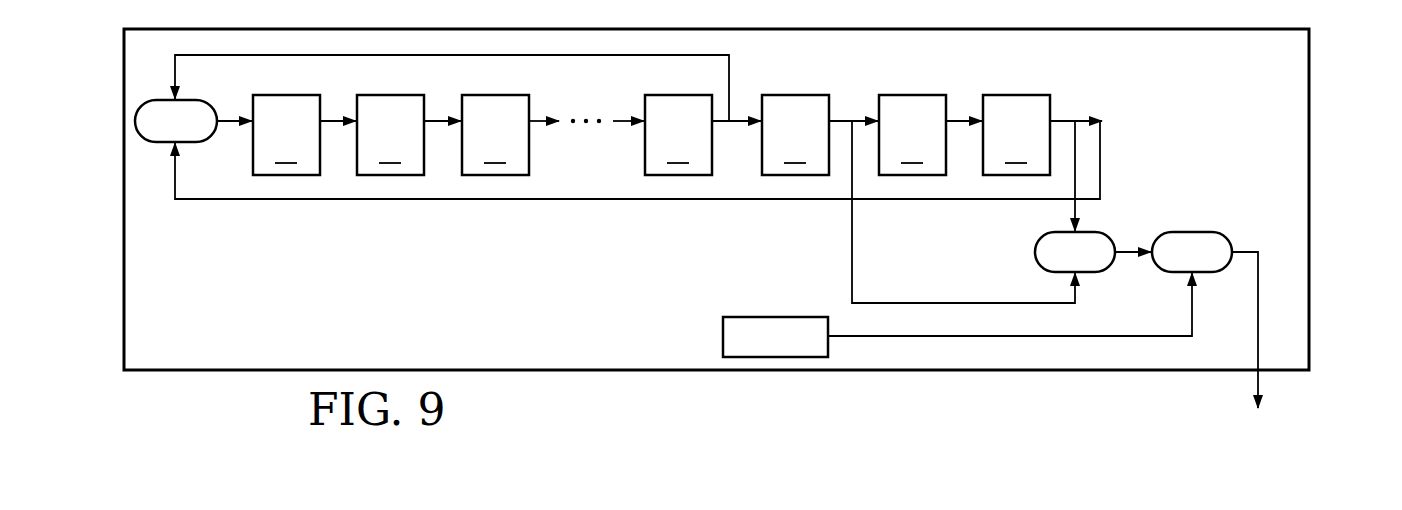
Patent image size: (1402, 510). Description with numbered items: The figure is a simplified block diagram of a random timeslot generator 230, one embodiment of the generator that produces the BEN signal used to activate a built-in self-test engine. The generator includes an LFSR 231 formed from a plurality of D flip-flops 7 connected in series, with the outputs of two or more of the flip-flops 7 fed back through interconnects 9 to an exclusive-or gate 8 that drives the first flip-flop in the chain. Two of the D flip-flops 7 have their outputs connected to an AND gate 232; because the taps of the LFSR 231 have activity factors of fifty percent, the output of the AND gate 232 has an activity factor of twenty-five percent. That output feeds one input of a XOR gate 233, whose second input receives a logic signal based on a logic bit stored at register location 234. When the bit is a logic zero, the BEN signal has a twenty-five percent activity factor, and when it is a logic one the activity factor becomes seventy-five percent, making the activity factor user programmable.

The random timeslot generator 230 is at (1311, 112).
The LFSR 231 is at (1074, 72).
The D flip-flop 7 is at (651, 135).
The exclusive-or gate 8 is at (205, 142).
The interconnects 9 is at (583, 56).
The AND gate 232 is at (1034, 248).
The XOR gate 233 is at (1192, 231).
The register location 234 is at (775, 316).